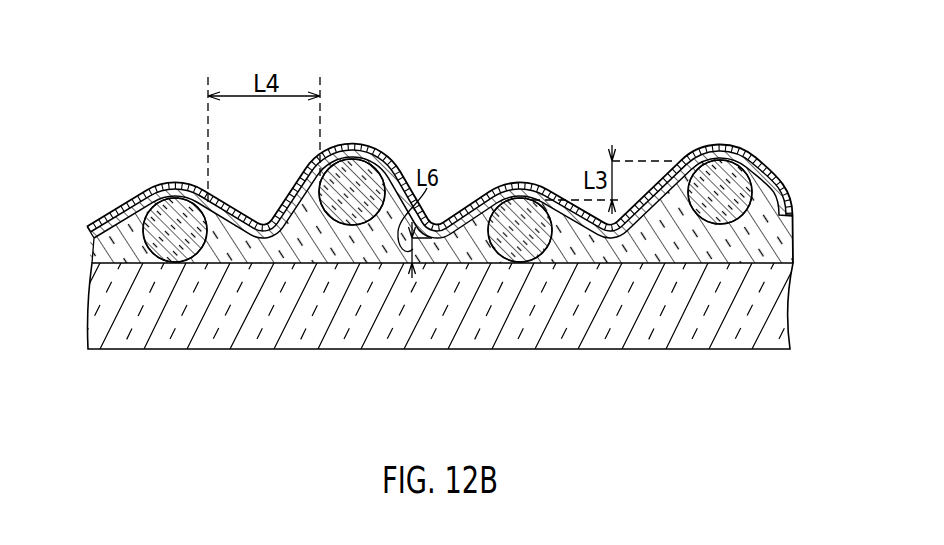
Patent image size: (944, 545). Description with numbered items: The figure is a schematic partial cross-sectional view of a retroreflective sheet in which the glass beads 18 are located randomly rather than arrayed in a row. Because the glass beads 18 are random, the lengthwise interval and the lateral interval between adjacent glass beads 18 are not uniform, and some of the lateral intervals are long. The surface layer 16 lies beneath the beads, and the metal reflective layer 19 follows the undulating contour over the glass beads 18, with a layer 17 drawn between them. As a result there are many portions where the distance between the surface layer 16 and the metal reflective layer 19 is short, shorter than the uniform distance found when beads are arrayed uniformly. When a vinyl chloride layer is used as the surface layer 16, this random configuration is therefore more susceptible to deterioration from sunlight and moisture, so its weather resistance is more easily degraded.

The surface layer 16 is at (768, 308).
The first layer 17 is at (770, 241).
The glass beads 18 is at (726, 197).
The metal reflective layer 19 is at (760, 154).